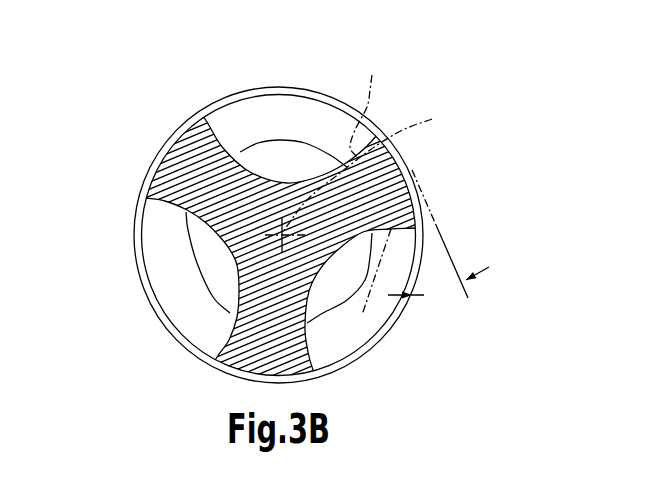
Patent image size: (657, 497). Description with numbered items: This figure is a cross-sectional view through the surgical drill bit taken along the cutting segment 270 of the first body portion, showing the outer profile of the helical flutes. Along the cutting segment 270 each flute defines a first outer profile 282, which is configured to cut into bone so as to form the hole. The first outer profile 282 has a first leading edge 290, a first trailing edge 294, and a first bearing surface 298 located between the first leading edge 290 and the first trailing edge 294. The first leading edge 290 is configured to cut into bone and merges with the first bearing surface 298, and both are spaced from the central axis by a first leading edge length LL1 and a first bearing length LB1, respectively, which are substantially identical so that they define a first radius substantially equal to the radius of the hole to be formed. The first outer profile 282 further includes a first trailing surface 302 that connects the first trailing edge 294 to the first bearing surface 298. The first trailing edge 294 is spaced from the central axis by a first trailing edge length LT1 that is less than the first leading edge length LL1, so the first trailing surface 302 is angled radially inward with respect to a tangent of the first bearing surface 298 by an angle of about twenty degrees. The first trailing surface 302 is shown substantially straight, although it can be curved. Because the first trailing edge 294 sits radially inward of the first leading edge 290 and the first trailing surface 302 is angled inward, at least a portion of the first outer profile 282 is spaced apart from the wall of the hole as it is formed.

The cutting segment 270 is at (424, 72).
The first outer profile 282 is at (143, 130).
The first leading edge 290 is at (135, 237).
The first trailing edge 294 is at (210, 117).
The first bearing surface 298 is at (140, 195).
The first trailing surface 302 is at (180, 137).
The first leading edge length LL1 is at (370, 103).
The first bearing length LB1 is at (381, 170).
The first trailing edge length LT1 is at (365, 282).